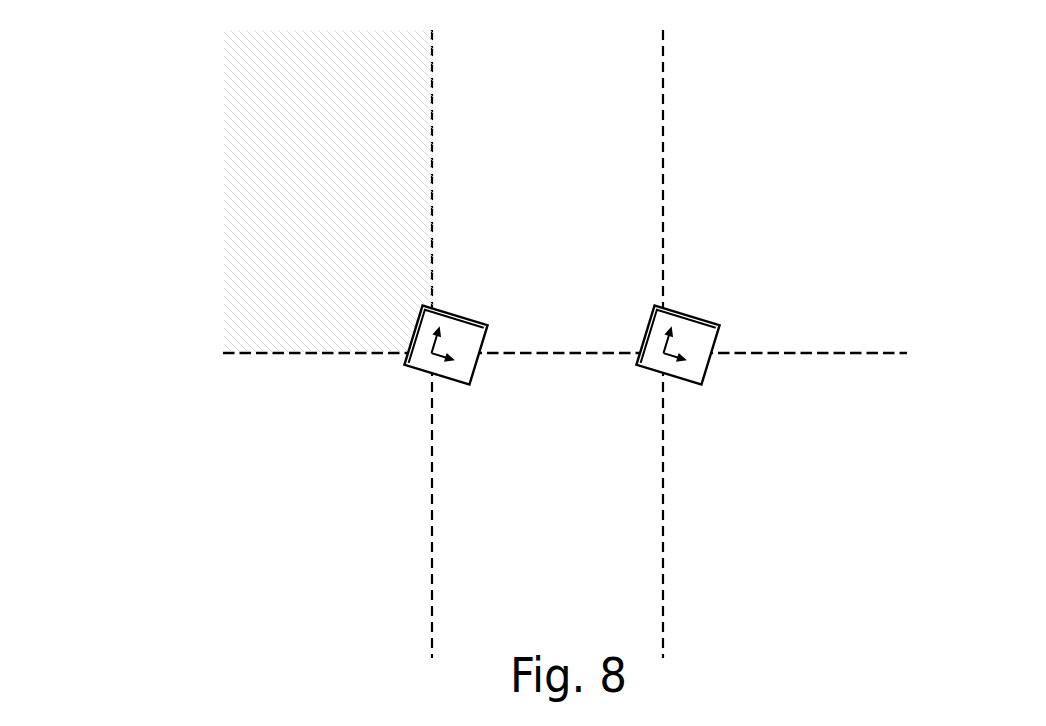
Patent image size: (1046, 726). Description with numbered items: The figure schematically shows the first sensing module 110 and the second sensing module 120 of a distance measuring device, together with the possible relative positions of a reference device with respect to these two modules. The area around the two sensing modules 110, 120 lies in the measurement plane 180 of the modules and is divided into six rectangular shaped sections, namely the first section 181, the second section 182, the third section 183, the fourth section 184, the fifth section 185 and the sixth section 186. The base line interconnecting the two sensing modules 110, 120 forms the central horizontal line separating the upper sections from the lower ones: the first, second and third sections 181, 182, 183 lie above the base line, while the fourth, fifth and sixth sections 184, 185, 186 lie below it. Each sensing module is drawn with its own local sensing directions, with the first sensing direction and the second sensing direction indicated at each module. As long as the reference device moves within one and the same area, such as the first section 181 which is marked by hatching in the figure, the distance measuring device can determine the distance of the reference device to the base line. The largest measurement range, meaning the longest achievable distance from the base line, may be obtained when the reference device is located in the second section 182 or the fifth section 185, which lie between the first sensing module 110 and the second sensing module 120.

The measurement plane 180 is at (186, 77).
The first section 181 is at (354, 154).
The second section 182 is at (565, 154).
The third section 183 is at (859, 154).
The fourth section 184 is at (365, 550).
The fifth section 185 is at (565, 550).
The sixth section 186 is at (859, 550).
The first sensing module 110 is at (407, 354).
The second sensing module 120 is at (707, 367).